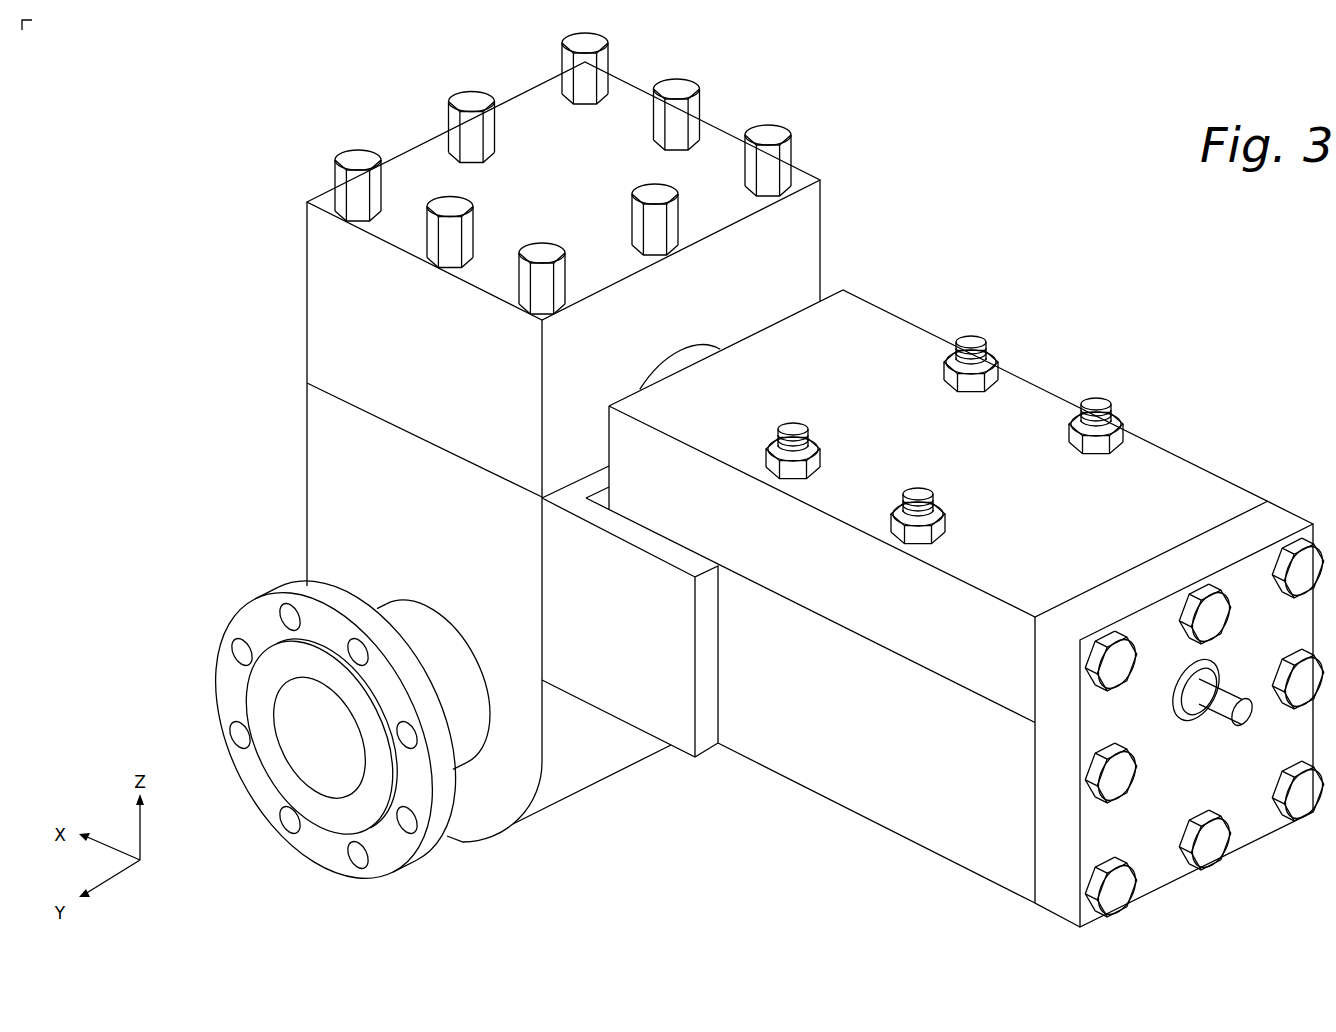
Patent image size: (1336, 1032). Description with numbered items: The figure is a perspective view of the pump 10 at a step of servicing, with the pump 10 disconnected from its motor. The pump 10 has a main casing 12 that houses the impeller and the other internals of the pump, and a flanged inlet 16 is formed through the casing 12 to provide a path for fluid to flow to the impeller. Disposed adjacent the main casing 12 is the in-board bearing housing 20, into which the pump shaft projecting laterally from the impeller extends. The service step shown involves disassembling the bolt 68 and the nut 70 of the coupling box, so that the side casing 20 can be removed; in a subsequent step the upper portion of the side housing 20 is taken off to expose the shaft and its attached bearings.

The pump 10 is at (895, 195).
The main casing 12 is at (305, 478).
The flanged inlet 16 is at (230, 684).
The in-board bearing housing 20 is at (876, 808).
The bolt 68 is at (793, 432).
The nut 70 is at (815, 462).